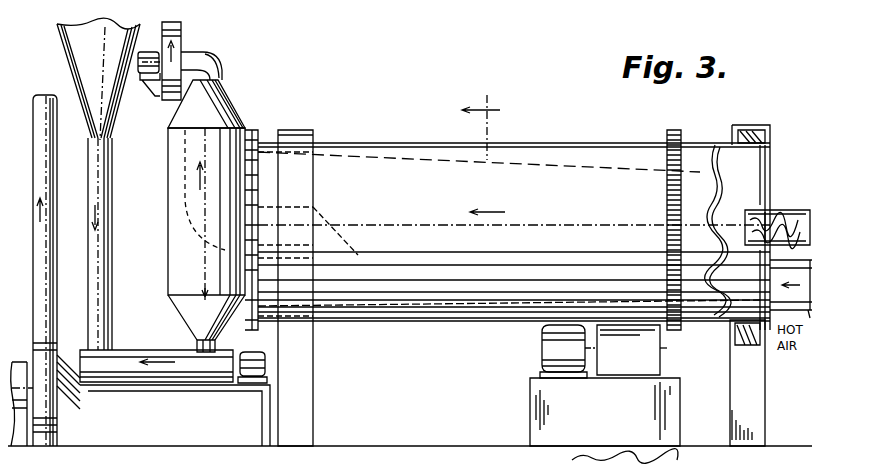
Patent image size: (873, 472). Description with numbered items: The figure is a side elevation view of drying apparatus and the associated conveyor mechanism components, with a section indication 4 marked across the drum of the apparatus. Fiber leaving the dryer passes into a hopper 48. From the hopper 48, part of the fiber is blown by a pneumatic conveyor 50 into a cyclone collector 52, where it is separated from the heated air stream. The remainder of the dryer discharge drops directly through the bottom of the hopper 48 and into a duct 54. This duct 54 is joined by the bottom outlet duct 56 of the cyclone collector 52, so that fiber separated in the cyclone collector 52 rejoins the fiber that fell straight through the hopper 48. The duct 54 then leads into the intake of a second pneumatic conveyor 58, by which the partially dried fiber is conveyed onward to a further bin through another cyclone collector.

The section line for FIG. 4 is at (481, 125).
The hopper 48 is at (245, 124).
The pneumatic conveyor 50 is at (182, 30).
The cyclone collector 52 is at (72, 55).
The duct 54 is at (115, 352).
The bottom outlet duct 56 is at (112, 258).
The pneumatic conveyor 58 is at (35, 353).